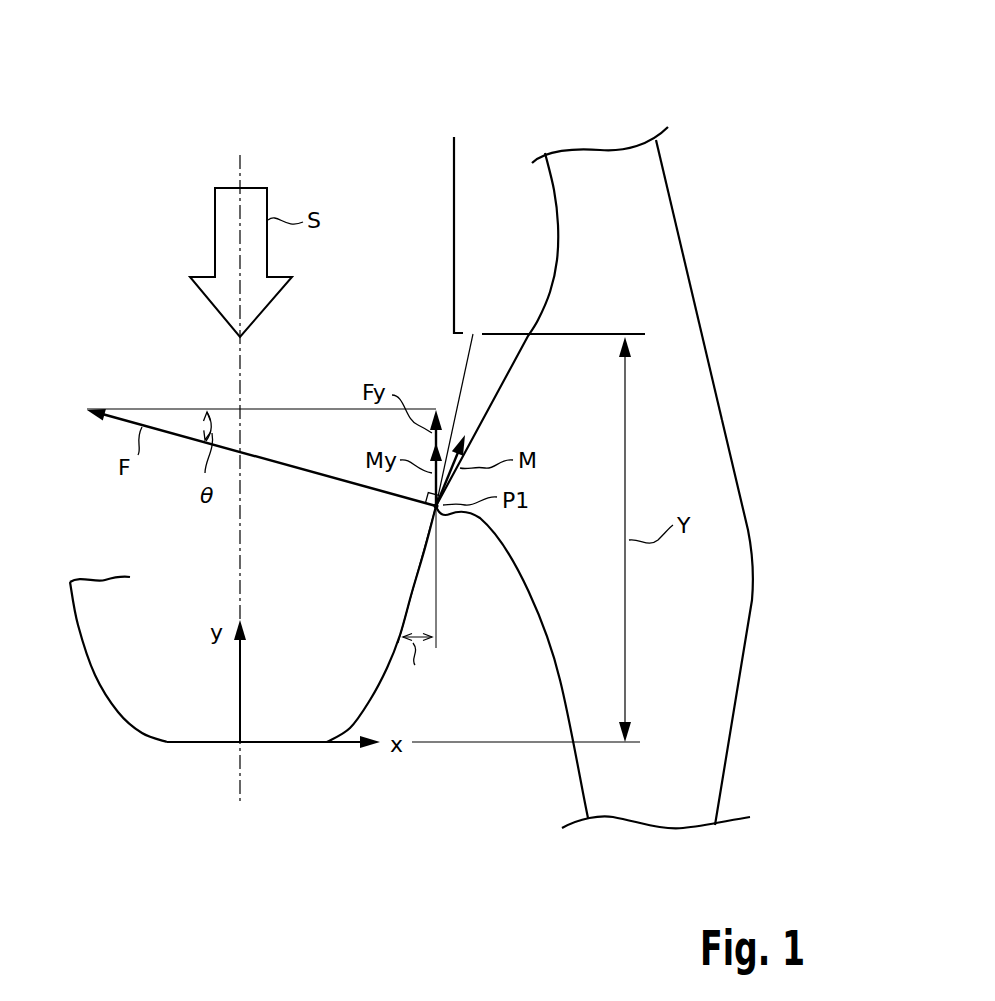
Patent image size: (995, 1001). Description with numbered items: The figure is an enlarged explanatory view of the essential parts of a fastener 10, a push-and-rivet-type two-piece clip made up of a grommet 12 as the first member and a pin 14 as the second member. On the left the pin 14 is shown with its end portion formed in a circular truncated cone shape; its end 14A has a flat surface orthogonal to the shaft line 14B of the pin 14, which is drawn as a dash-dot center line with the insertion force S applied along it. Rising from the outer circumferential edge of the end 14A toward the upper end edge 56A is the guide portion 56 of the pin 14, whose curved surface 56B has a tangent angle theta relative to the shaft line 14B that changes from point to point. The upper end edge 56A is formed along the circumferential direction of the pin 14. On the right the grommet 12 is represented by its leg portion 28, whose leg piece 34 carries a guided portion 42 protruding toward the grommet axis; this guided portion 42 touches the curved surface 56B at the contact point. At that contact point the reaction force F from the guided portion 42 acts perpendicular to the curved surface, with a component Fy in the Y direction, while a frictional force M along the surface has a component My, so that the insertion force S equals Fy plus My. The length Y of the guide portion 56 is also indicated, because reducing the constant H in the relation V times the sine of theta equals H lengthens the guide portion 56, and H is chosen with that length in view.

The fastener 10 is at (605, 50).
The grommet 12 is at (612, 137).
The pin 14 is at (465, 152).
The end of the pin 14A is at (197, 745).
The shaft line of the pin 14B is at (242, 765).
The leg portion 28 is at (695, 235).
The leg piece 34 is at (728, 442).
The guided portion 42 is at (432, 513).
The guide portion 56 is at (378, 685).
The upper end edge of the guide portion 56A is at (477, 330).
The curved surface of the guide portion 56B is at (415, 585).